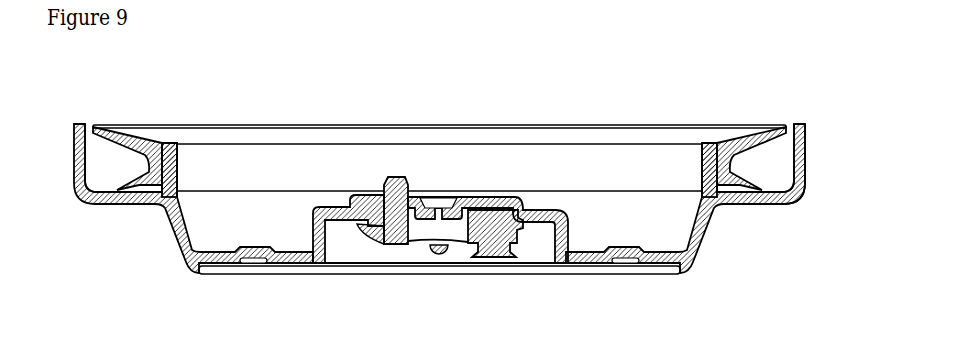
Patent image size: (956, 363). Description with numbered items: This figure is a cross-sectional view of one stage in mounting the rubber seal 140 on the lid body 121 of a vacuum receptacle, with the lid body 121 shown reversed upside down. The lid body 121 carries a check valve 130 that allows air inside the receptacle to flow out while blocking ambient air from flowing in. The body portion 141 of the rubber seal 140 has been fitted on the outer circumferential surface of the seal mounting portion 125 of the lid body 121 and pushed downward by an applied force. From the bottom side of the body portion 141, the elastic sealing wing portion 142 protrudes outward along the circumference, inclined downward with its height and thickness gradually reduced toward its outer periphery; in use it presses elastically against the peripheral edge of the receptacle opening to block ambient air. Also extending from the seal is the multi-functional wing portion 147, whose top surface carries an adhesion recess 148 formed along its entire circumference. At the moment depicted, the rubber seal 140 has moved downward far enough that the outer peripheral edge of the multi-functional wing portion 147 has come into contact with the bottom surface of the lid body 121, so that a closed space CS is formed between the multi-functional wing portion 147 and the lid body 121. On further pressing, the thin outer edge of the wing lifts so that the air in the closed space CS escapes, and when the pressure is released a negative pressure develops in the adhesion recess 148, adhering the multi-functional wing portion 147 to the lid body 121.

The lid body 121 is at (655, 268).
The seal mounting portion 125 is at (705, 167).
The check valve 130 is at (418, 243).
The rubber seal 140 is at (713, 142).
The body portion 141 is at (183, 143).
The elastic sealing wing portion 142 is at (140, 132).
The multi-functional wing portion 147 is at (125, 178).
The adhesion recess 148 is at (748, 218).
The closed space CS is at (725, 200).